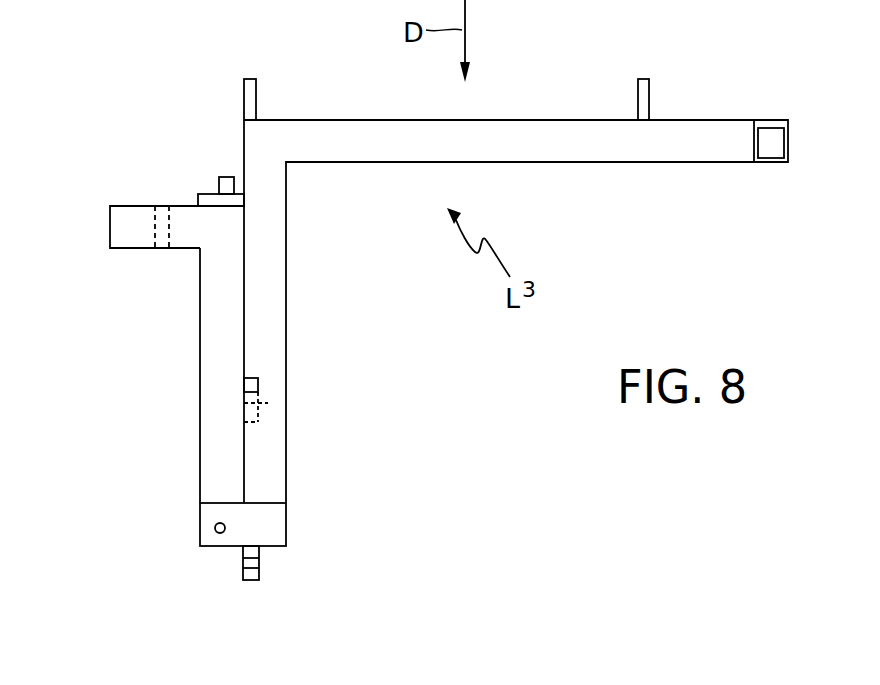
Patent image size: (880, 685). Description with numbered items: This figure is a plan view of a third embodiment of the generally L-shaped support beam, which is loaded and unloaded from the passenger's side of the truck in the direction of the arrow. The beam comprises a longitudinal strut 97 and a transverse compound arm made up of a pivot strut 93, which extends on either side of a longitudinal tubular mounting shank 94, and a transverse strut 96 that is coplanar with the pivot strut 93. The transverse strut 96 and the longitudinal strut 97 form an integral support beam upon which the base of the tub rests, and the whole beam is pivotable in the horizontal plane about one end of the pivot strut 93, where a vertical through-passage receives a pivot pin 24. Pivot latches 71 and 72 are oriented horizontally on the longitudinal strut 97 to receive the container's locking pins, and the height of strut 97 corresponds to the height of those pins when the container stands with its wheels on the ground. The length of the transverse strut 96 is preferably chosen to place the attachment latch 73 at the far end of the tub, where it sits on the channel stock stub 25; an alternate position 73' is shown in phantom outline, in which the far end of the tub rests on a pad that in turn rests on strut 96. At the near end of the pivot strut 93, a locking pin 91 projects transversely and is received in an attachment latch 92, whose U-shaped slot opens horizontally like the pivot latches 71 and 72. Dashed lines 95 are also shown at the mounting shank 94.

The pivot pin 24 is at (214, 528).
The stub 25 is at (270, 548).
The pivot latch 71 is at (649, 93).
The pivot latch 72 is at (257, 95).
The attachment latch 73 is at (219, 587).
The attachment latch (alternate position) 73' is at (302, 419).
The locking pin 91 is at (225, 177).
The attachment latch 92 is at (198, 200).
The pivot strut 93 is at (200, 402).
The longitudinal tubular mounting shank 94 is at (110, 226).
The slot 95 is at (165, 250).
The transverse strut 96 is at (286, 301).
The longitudinal strut 97 is at (637, 163).